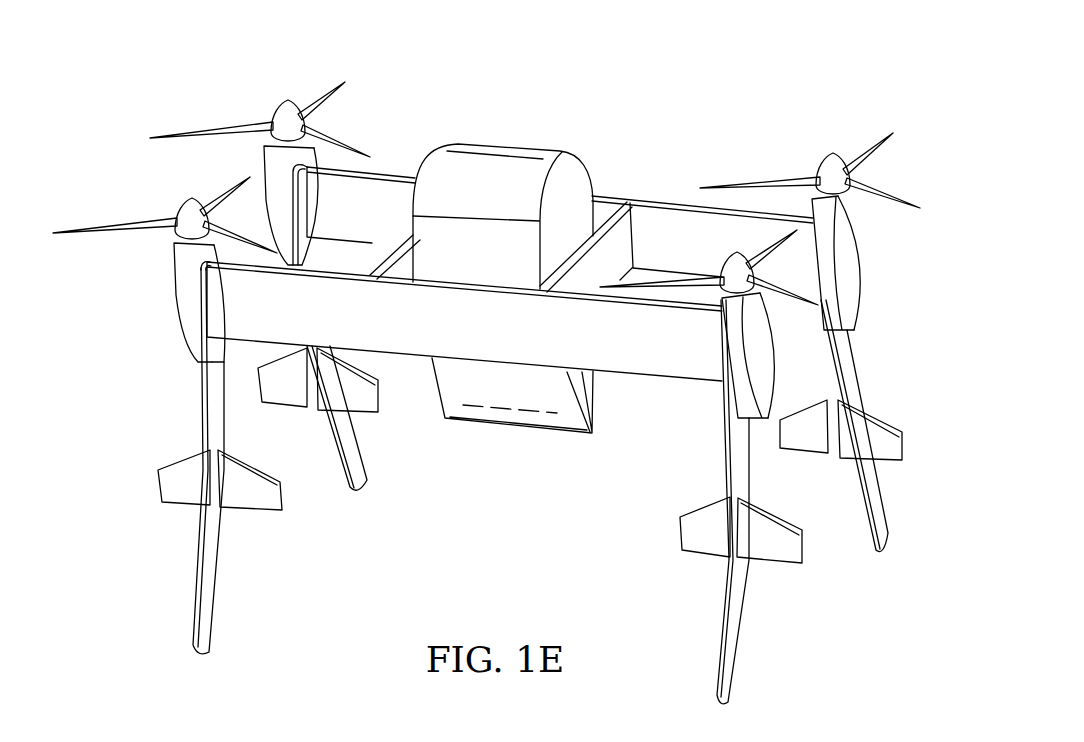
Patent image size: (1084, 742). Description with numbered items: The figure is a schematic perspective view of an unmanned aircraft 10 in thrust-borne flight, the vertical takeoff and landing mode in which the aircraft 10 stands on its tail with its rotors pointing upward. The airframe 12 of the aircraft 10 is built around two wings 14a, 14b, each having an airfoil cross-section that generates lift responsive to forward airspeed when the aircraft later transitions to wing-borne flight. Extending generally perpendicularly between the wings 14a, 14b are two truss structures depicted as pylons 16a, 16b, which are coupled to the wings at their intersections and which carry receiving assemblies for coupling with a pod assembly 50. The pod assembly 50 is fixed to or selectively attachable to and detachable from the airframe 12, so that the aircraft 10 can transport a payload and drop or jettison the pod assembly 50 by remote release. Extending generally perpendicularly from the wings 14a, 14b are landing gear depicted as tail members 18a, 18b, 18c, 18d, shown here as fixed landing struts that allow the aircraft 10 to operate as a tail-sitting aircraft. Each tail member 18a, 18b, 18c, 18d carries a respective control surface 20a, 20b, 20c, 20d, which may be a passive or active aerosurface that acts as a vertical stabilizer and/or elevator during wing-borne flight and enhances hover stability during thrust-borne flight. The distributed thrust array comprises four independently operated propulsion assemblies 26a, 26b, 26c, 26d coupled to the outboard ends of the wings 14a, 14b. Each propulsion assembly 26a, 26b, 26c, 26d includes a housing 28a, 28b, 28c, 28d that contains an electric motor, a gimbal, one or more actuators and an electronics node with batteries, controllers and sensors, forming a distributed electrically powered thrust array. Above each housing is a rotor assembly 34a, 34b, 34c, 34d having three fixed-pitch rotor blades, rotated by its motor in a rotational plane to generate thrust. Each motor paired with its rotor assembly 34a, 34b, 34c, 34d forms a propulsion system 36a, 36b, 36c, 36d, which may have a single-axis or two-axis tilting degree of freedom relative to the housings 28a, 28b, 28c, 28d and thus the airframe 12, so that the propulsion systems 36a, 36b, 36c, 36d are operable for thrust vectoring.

The aircraft 10 is at (644, 62).
The airframe 12 is at (622, 180).
The wing 14a is at (668, 373).
The wing 14b is at (393, 190).
The pylon 16a is at (398, 268).
The pylon 16b is at (563, 280).
The tail member 18a is at (208, 625).
The tail member 18b is at (728, 673).
The tail member 18c is at (880, 530).
The tail member 18d is at (358, 480).
The control surface 20a is at (185, 495).
The control surface 20b is at (705, 543).
The control surface 20c is at (807, 440).
The control surface 20d is at (283, 390).
The propulsion assembly 26a is at (185, 315).
The propulsion assembly 26b is at (762, 357).
The propulsion assembly 26c is at (853, 282).
The propulsion assembly 26d is at (274, 200).
The housing 28a is at (177, 270).
The housing 28b is at (730, 342).
The housing 28c is at (853, 239).
The housing 28d is at (268, 173).
The rotor assembly 34a is at (82, 227).
The rotor assembly 34b is at (683, 272).
The rotor assembly 34c is at (900, 194).
The rotor assembly 34d is at (178, 132).
The propulsion system 36a is at (172, 198).
The propulsion system 36b is at (724, 248).
The propulsion system 36c is at (820, 146).
The propulsion system 36d is at (276, 92).
The pod assembly 50 is at (463, 261).